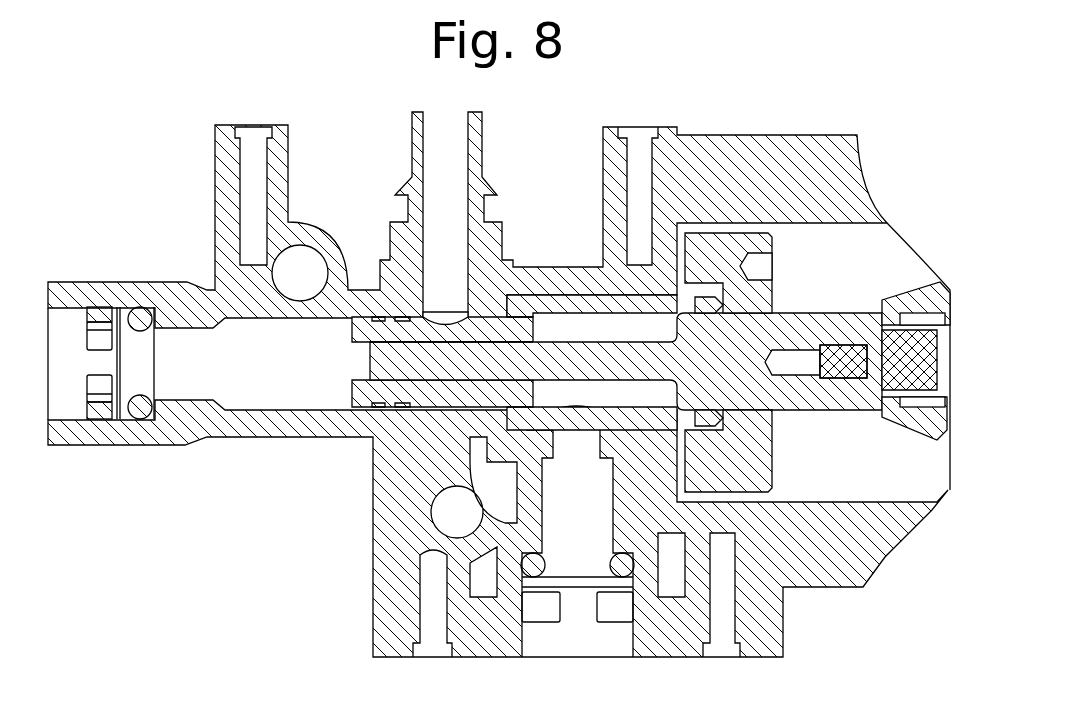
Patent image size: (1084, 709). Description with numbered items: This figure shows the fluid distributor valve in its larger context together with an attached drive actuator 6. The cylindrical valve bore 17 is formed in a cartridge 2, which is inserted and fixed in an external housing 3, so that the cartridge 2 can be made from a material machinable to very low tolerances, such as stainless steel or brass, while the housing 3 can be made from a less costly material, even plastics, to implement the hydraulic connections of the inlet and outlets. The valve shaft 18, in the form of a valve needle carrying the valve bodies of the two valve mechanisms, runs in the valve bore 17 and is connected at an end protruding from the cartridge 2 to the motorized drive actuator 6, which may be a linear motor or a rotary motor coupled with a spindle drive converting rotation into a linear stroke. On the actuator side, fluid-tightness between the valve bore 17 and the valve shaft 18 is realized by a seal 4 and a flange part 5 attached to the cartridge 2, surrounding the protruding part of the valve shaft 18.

The cartridge 2 is at (465, 398).
The external housing 3 is at (405, 538).
The seal 4 is at (707, 300).
The flange part 5 is at (737, 248).
The drive actuator 6 is at (908, 303).
The valve bore 17 is at (478, 342).
The valve shaft 18 is at (551, 350).